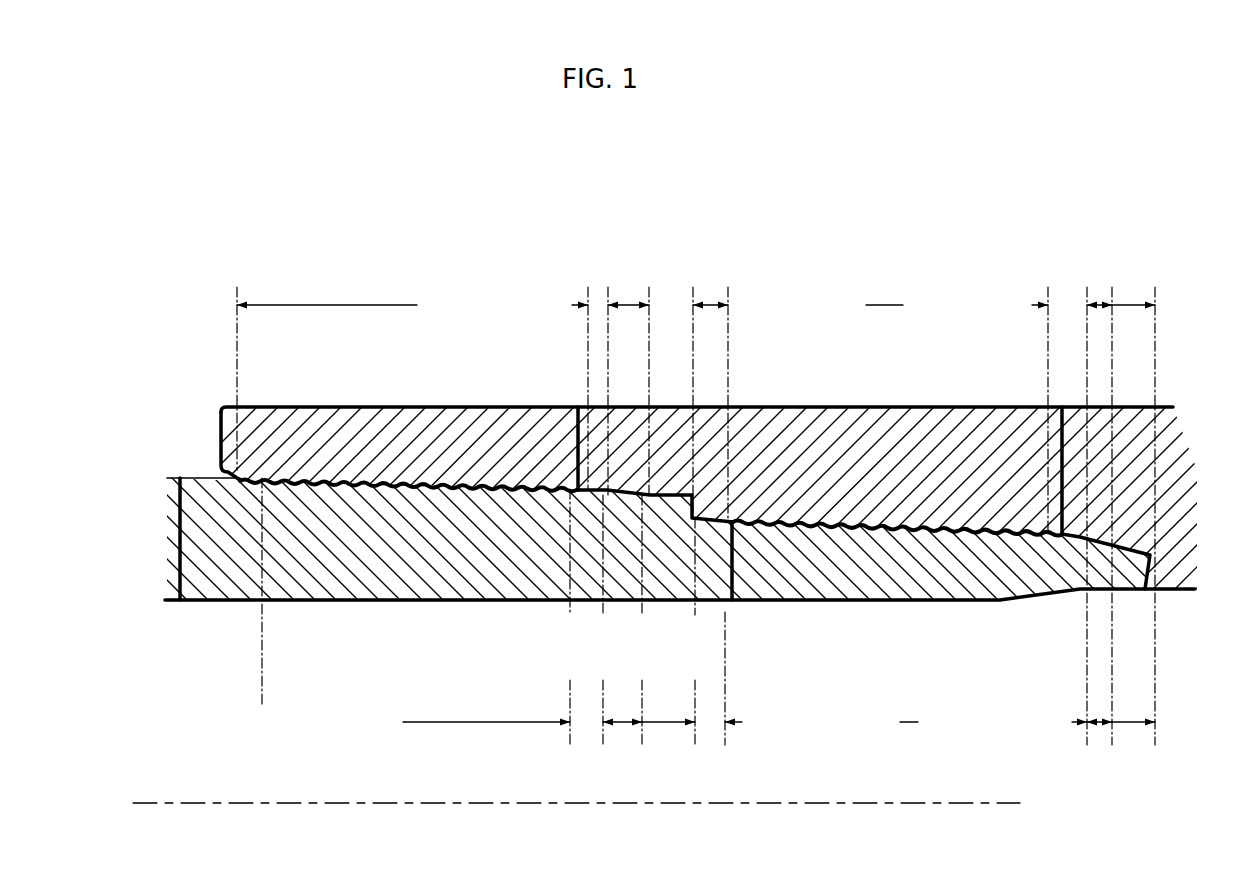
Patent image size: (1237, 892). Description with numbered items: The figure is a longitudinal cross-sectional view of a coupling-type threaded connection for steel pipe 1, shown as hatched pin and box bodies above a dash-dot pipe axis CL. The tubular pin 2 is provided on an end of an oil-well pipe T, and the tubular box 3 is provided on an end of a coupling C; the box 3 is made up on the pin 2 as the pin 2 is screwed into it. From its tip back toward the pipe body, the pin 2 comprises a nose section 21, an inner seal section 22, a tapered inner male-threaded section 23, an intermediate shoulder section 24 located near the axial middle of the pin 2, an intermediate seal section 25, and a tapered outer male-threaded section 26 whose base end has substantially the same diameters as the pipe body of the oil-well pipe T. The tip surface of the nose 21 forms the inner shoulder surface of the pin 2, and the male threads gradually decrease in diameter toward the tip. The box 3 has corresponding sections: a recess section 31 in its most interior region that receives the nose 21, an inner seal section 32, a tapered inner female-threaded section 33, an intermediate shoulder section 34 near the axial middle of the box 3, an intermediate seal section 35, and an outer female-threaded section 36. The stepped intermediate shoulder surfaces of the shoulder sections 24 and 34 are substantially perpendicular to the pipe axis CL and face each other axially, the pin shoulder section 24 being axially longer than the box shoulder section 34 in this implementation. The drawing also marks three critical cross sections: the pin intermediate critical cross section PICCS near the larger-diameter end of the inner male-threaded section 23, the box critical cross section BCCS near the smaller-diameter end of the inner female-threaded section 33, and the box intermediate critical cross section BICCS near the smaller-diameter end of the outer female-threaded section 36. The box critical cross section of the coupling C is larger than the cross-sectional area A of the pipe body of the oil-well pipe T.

The threaded connection for steel pipe 1 is at (186, 397).
The pin 2 is at (882, 606).
The box 3 is at (808, 398).
The nose section 21 is at (1135, 722).
The inner seal section 22 is at (1098, 722).
The inner male-threaded section 23 is at (908, 722).
The intermediate shoulder section 24 is at (668, 722).
The intermediate seal section 25 is at (620, 722).
The outer male-threaded section 26 is at (403, 722).
The recess section 31 is at (1132, 305).
The inner seal section 32 is at (1099, 305).
The inner female-threaded section 33 is at (871, 305).
The intermediate shoulder section 34 is at (712, 305).
The intermediate seal section 35 is at (630, 305).
The outer female-threaded section 36 is at (404, 305).
The cross-sectional area of the pipe body A is at (178, 497).
The oil-well pipe T is at (214, 593).
The coupling C is at (1187, 398).
The pipe axis CL is at (220, 803).
The box intermediate critical cross section BICCS is at (577, 455).
The box critical cross section BCCS is at (1058, 468).
The pin intermediate critical cross section PICCS is at (746, 592).